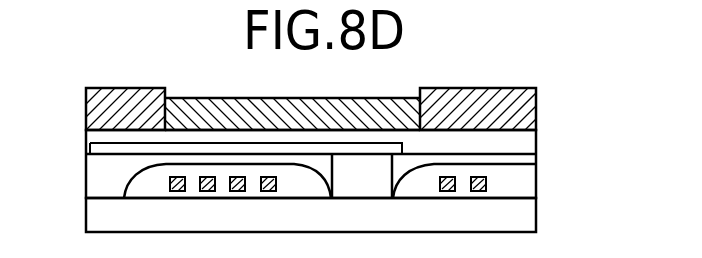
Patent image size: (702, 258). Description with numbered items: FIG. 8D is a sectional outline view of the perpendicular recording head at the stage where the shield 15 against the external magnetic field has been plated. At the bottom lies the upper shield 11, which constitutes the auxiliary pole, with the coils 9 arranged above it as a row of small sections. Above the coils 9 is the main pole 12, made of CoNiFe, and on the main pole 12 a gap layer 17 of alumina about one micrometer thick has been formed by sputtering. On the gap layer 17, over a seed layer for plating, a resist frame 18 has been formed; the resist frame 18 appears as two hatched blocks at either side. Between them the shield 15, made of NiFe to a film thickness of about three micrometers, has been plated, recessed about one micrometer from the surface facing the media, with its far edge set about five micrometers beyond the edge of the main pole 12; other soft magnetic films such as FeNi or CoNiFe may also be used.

The coils 9 is at (168, 183).
The upper shield 11 is at (103, 220).
The main pole 12 is at (92, 148).
The shield against the external magnetic field 15 is at (268, 107).
The gap layer 17 is at (523, 140).
The resist frame 18 is at (96, 109).